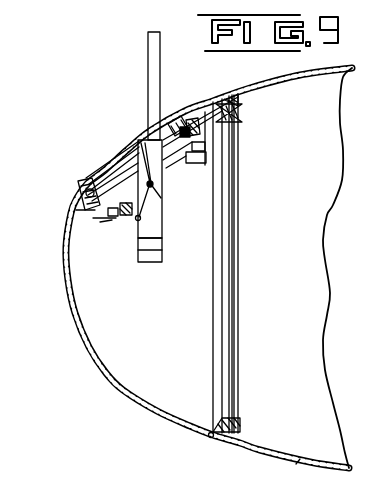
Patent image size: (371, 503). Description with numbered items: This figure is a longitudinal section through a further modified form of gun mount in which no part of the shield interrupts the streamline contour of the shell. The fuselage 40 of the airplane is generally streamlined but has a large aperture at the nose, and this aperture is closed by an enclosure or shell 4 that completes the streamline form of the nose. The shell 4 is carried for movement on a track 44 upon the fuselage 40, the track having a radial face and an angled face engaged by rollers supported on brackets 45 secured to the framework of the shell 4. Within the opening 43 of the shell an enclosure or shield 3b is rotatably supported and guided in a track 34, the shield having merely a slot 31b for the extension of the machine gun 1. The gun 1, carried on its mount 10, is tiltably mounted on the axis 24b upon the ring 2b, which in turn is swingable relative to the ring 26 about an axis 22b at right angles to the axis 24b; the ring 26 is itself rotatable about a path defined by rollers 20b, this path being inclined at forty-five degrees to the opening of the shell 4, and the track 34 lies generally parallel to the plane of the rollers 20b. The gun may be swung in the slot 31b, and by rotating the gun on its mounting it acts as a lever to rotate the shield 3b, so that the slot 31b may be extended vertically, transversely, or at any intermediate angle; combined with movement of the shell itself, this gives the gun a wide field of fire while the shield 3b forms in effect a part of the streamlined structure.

The machine gun 1 is at (148, 52).
The slot 31b is at (133, 141).
The shield 3b is at (112, 170).
The opening 43 is at (86, 186).
The track 34 is at (78, 200).
The ring 2b is at (104, 209).
The rollers 20b is at (104, 226).
The mount 10 is at (141, 220).
The axis 24b is at (153, 187).
The axis 22b is at (180, 150).
The ring 26 is at (190, 162).
The brackets 45 is at (232, 112).
The track 44 is at (238, 432).
The shell 4 is at (89, 356).
The fuselage 40 is at (296, 465).